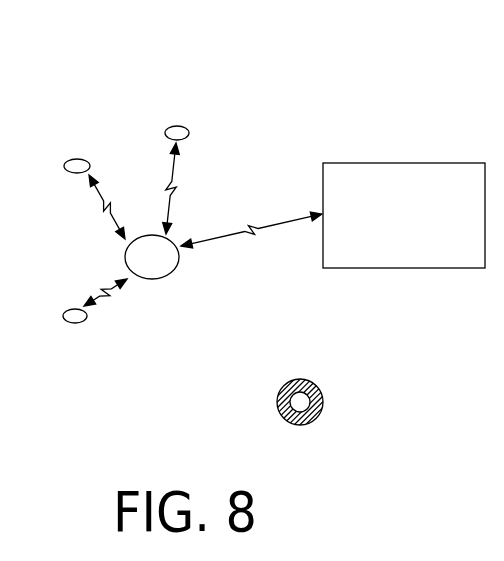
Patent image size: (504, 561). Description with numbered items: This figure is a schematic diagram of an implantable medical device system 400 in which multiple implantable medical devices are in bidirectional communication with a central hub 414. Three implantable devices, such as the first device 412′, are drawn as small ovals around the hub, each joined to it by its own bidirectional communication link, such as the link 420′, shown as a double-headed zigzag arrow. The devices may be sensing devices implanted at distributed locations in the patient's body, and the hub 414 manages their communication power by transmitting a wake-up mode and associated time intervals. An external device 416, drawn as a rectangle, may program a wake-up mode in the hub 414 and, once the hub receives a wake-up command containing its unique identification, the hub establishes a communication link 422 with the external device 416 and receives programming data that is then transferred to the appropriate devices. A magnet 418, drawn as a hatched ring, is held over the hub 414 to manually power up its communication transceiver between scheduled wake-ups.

The system 400 is at (247, 53).
The hub 414 is at (147, 279).
The implantable medical device 412′ is at (64, 165).
The communication link 420′ is at (111, 206).
The external device 416 is at (410, 163).
The communication link 422 is at (273, 229).
The magnet 418 is at (322, 395).